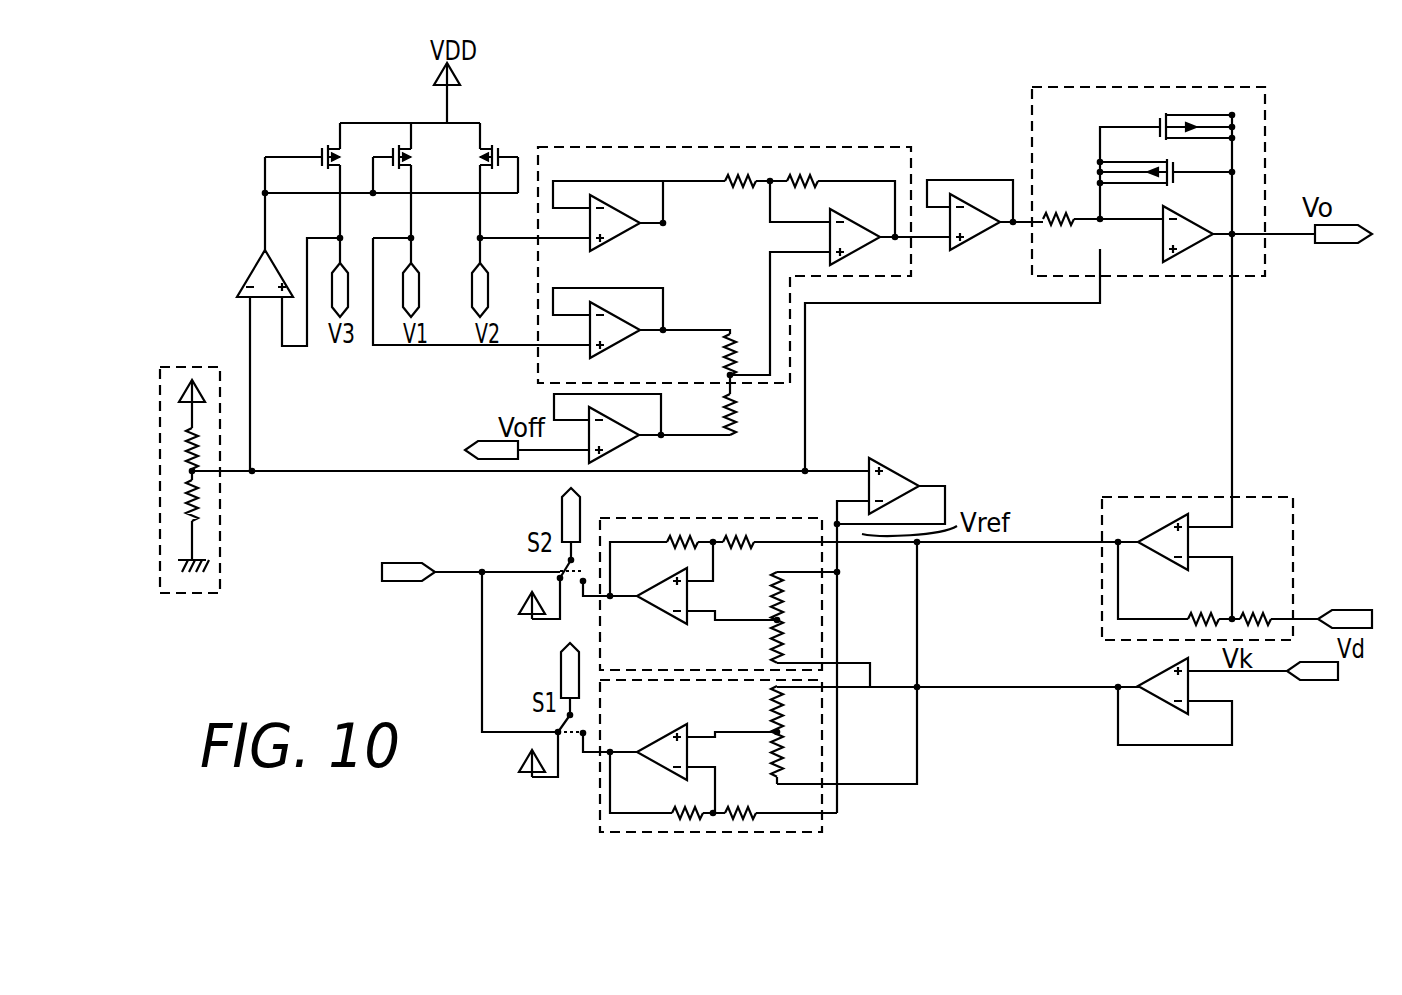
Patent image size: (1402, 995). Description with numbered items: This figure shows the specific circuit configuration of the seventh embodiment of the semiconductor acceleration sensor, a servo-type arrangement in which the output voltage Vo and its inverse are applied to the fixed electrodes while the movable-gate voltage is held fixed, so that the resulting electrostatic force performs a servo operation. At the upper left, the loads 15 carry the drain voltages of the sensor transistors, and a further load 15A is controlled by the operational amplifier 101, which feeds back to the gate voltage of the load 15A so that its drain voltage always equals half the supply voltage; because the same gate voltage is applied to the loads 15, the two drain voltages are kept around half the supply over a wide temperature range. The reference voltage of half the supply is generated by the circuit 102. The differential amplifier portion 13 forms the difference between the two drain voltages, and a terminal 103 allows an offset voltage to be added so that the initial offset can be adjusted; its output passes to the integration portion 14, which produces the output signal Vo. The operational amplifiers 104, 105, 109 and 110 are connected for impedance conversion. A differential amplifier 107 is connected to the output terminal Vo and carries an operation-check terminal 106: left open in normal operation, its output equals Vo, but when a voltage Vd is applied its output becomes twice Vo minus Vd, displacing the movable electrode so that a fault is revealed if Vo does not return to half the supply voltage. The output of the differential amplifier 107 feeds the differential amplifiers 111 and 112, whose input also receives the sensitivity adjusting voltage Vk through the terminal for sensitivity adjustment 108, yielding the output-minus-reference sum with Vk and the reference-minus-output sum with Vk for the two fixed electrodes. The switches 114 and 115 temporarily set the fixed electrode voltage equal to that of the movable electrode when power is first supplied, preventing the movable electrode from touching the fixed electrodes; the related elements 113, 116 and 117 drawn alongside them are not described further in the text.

The differential amplifier portion 13 is at (721, 147).
The integration portion 14 is at (1163, 87).
The load 15 is at (398, 146).
The load 15A is at (330, 146).
The operational amplifier 101 is at (243, 277).
The circuit 102 is at (180, 367).
The terminal 103 is at (490, 442).
The operational amplifier 104 is at (628, 445).
The operational amplifier 105 is at (968, 207).
The terminal 106 is at (1360, 612).
The differential amplifier 107 is at (1135, 497).
The terminal for sensitivity adjustment 108 is at (1310, 682).
The operational amplifier 109 is at (1182, 714).
The operational amplifier 110 is at (898, 470).
The differential amplifier 111 is at (748, 832).
The differential amplifier 112 is at (716, 518).
The input terminal 113 is at (408, 563).
The switch 114 is at (573, 588).
The switch 115 is at (572, 750).
The switch S2 116 is at (560, 523).
The switch S1 117 is at (560, 668).